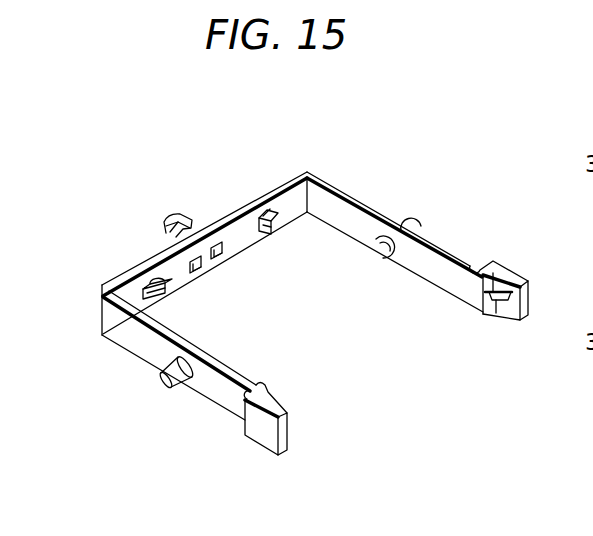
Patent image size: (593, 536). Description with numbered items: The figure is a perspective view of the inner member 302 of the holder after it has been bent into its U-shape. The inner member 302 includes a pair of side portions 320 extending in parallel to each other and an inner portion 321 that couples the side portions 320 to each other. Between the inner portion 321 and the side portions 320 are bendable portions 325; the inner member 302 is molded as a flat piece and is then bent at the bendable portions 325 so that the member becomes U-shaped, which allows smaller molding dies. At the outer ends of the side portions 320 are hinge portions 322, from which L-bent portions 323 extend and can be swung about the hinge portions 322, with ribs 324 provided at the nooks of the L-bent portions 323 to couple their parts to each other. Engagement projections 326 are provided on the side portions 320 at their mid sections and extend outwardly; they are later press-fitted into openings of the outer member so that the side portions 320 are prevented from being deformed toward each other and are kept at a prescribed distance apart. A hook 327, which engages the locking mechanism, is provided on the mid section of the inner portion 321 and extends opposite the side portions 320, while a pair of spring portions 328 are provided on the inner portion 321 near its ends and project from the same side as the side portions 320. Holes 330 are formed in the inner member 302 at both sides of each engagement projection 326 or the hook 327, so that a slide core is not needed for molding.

The inner member 302 is at (109, 225).
The side portions 320 is at (347, 193).
The inner portion 321 is at (278, 187).
The hinge portions 322 is at (480, 283).
The L-bent portions 323 is at (509, 265).
The ribs 324 is at (495, 304).
The bendable portions 325 is at (311, 172).
The engagement projections 326 is at (421, 218).
The hook 327 is at (176, 212).
The spring portions 328 is at (279, 228).
The holes 330 is at (203, 270).